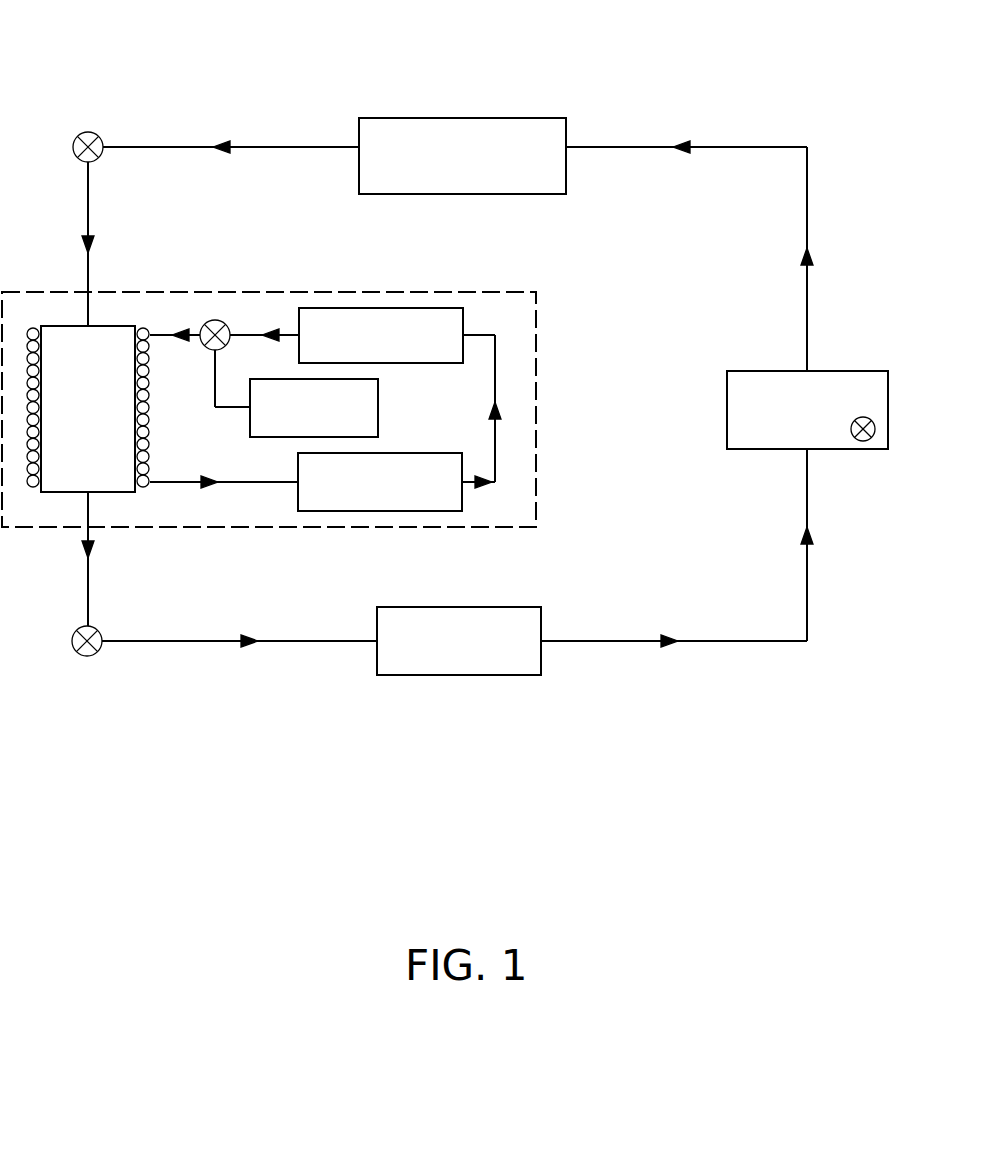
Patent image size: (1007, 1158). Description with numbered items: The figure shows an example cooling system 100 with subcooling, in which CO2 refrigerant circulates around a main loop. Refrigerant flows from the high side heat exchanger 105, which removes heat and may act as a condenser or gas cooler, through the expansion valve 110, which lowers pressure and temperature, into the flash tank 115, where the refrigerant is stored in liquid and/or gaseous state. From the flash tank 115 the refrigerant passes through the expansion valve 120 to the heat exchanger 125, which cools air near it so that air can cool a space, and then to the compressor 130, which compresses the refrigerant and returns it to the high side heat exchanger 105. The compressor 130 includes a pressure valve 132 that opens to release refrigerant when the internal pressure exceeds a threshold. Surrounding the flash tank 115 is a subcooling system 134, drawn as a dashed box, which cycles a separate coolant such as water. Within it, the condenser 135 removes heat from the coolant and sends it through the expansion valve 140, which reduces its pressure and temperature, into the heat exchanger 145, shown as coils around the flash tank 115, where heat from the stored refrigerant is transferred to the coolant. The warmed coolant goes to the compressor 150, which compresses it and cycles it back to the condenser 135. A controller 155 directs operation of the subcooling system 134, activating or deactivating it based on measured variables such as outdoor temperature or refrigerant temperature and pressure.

The cooling system 100 is at (474, 29).
The high side heat exchanger 105 is at (497, 118).
The expansion valve 110 is at (75, 134).
The flash tank 115 is at (103, 326).
The expansion valve 120 is at (87, 657).
The heat exchanger 125 is at (458, 676).
The compressor 130 is at (770, 371).
The pressure valve 132 is at (866, 441).
The subcooling system 134 is at (536, 408).
The condenser 135 is at (383, 308).
The expansion valve 140 is at (215, 322).
The heat exchanger 145 is at (150, 470).
The compressor 150 is at (380, 453).
The controller 155 is at (250, 425).